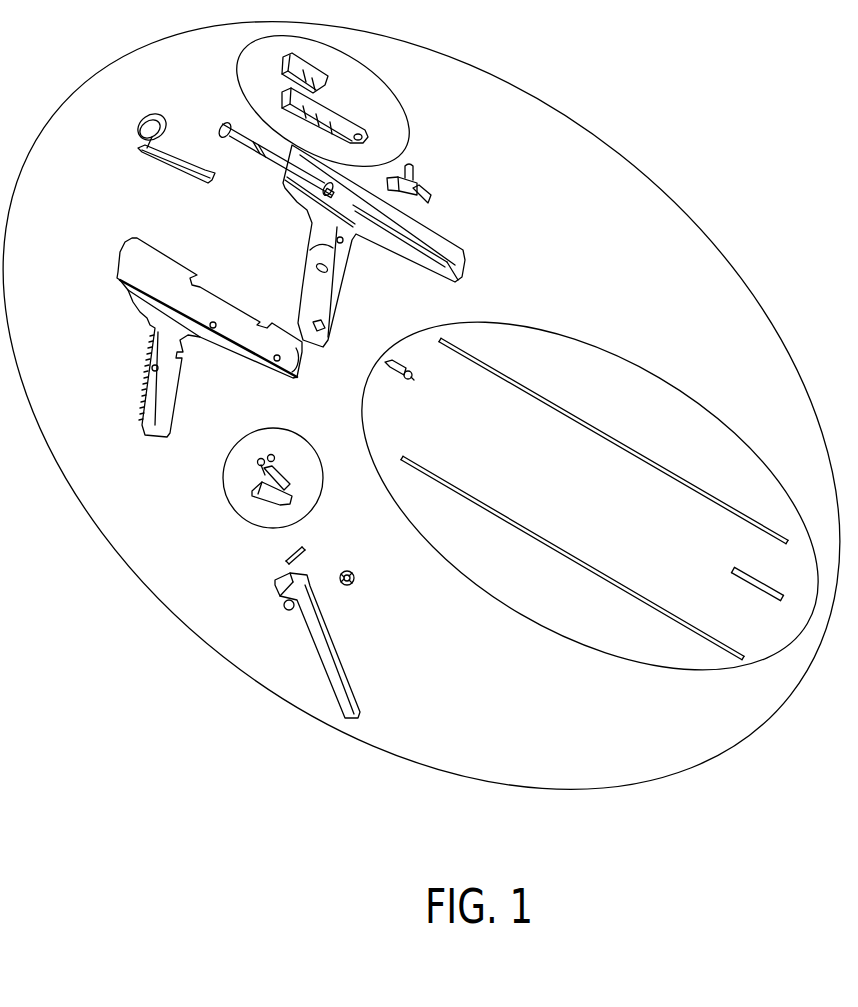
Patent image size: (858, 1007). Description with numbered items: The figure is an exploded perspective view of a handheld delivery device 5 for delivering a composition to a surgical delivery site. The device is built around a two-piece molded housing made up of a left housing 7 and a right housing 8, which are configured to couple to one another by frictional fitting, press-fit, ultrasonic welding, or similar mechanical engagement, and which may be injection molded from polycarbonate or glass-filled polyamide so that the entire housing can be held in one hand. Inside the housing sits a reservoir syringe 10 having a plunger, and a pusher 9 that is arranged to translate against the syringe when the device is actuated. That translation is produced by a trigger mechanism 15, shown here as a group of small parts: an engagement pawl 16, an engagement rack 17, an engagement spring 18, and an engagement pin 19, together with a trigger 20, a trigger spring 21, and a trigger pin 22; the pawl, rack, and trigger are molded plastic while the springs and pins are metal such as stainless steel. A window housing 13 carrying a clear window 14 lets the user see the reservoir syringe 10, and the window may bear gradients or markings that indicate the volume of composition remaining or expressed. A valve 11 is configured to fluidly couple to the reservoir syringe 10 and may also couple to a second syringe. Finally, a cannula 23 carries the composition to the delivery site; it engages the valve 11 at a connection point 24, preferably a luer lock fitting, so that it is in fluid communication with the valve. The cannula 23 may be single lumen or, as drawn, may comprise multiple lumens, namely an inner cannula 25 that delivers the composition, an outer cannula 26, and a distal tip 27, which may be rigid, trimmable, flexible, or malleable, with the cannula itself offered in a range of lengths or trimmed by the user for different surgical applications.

The delivery device 5 is at (716, 120).
The left housing 7 is at (308, 232).
The right housing 8 is at (119, 275).
The pusher 9 is at (142, 143).
The reservoir syringe 10 is at (265, 152).
The valve 11 is at (434, 197).
The window housing 13 is at (368, 135).
The clear window 14 is at (322, 82).
The trigger mechanism 15 is at (222, 495).
The engagement pawl 16 is at (258, 462).
The engagement rack 17 is at (292, 498).
The engagement spring 18 is at (280, 458).
The engagement pin 19 is at (290, 480).
The trigger 20 is at (360, 708).
The trigger spring 21 is at (356, 588).
The trigger pin 22 is at (274, 558).
The cannula 23 is at (636, 366).
The connection point 24 is at (412, 380).
The inner cannula 25 is at (560, 406).
The outer cannula 26 is at (520, 526).
The tip 27 is at (730, 570).